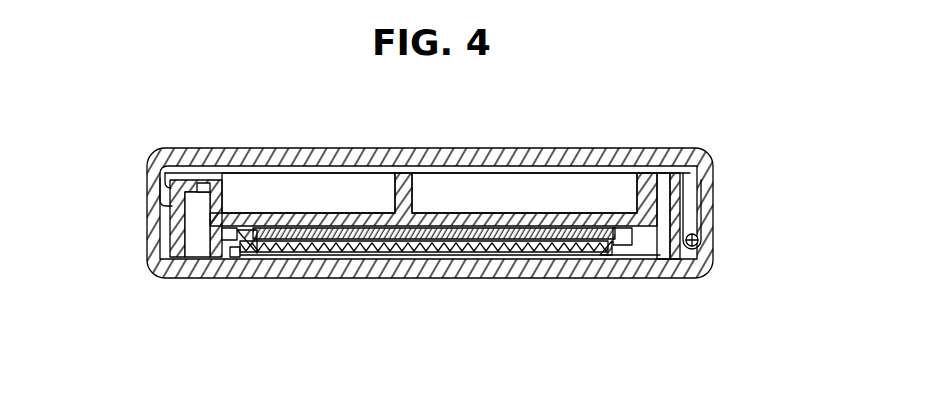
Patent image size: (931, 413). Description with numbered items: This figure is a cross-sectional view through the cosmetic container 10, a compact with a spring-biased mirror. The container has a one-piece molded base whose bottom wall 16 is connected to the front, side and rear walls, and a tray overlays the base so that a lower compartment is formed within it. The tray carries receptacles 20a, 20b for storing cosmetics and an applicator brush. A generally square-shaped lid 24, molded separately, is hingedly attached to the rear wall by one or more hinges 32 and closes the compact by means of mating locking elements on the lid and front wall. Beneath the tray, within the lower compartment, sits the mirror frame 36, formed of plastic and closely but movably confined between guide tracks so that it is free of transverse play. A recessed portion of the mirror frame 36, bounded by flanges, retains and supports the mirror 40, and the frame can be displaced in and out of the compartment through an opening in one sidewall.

The cosmetic container 10 is at (407, 222).
The bottom wall 16 is at (520, 262).
The receptacle 20a is at (255, 192).
The receptacle 20b is at (555, 202).
The lid 24 is at (477, 148).
The hinge 32 is at (712, 245).
The mirror frame 36 is at (337, 254).
The mirror 40 is at (257, 277).